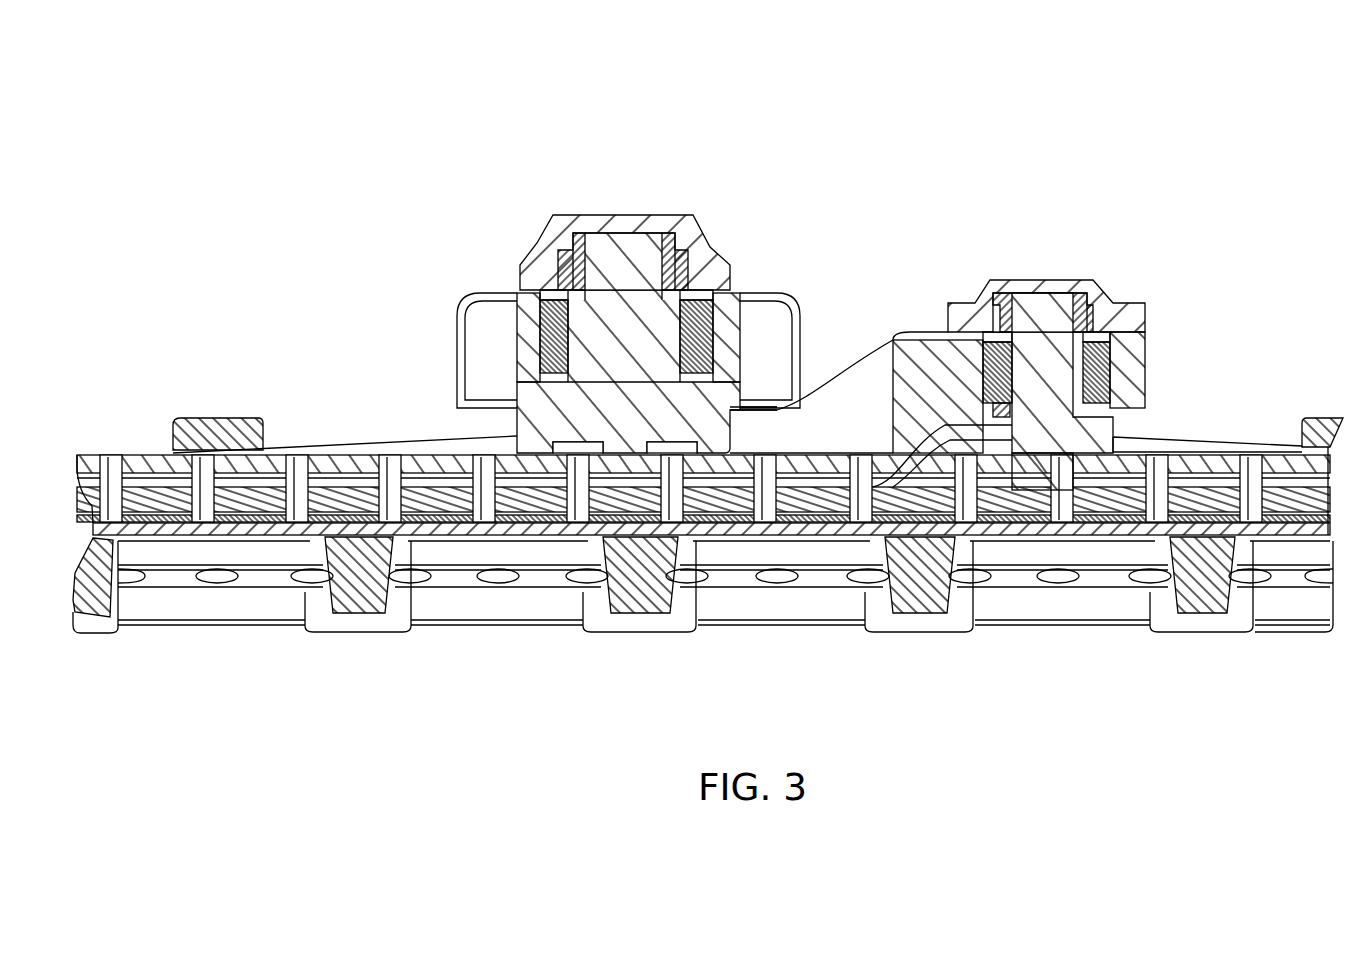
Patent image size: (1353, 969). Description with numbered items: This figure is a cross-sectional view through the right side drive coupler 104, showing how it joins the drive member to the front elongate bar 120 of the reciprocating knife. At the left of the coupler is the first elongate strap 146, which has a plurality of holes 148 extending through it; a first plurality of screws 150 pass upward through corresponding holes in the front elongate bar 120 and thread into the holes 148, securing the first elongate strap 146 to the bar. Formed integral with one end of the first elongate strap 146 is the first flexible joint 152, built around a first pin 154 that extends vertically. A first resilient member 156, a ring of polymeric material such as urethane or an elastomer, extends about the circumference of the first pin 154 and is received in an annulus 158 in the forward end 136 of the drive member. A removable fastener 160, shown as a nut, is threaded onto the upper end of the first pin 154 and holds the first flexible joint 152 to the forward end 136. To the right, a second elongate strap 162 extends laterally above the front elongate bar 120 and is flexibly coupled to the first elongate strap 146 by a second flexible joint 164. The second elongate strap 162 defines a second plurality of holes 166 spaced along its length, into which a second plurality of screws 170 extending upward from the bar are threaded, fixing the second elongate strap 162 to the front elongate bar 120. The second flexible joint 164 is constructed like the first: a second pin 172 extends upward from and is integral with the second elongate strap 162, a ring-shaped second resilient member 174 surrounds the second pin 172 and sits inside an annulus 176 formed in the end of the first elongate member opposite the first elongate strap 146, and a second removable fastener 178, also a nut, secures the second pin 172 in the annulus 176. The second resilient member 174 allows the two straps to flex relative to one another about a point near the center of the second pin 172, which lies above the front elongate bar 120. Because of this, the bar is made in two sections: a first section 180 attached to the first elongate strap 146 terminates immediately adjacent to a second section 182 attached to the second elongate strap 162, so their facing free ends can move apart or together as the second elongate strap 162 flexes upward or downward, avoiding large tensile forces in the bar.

The right side drive coupler 104 is at (975, 62).
The front elongate bar 120 is at (440, 498).
The forward end 136 is at (725, 307).
The first elongate strap 146 is at (435, 447).
The plurality of holes 148 is at (300, 429).
The first plurality of screws 150 is at (295, 530).
The first flexible joint 152 is at (477, 221).
The first pin 154 is at (630, 263).
The first resilient member 156 is at (515, 365).
The annulus 158 is at (573, 322).
The removable fastener 160 is at (687, 257).
The second elongate strap 162 is at (1190, 457).
The second flexible joint 164 is at (1156, 248).
The second plurality of holes 166 is at (1255, 429).
The second plurality of screws 170 is at (1068, 517).
The second pin 172 is at (1052, 340).
The second resilient member 174 is at (1127, 358).
The annulus 176 is at (1047, 303).
The second removable fastener 178 is at (983, 300).
The first section 180 is at (900, 503).
The second section 182 is at (940, 497).